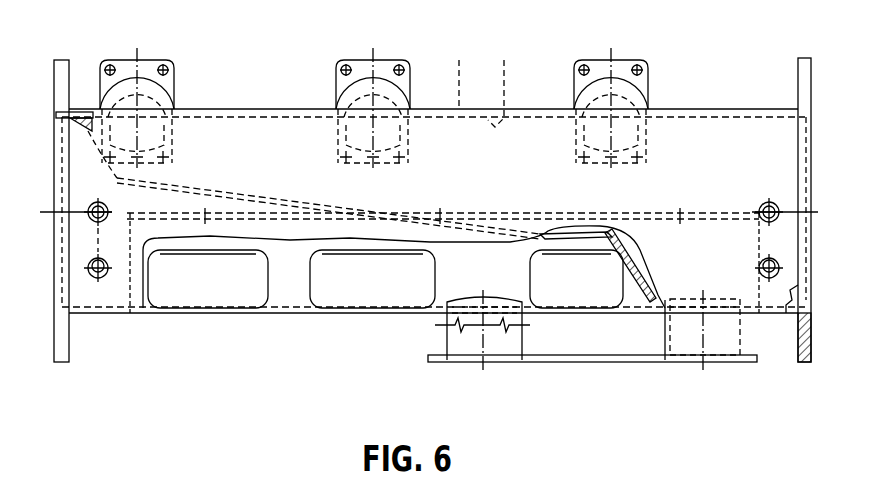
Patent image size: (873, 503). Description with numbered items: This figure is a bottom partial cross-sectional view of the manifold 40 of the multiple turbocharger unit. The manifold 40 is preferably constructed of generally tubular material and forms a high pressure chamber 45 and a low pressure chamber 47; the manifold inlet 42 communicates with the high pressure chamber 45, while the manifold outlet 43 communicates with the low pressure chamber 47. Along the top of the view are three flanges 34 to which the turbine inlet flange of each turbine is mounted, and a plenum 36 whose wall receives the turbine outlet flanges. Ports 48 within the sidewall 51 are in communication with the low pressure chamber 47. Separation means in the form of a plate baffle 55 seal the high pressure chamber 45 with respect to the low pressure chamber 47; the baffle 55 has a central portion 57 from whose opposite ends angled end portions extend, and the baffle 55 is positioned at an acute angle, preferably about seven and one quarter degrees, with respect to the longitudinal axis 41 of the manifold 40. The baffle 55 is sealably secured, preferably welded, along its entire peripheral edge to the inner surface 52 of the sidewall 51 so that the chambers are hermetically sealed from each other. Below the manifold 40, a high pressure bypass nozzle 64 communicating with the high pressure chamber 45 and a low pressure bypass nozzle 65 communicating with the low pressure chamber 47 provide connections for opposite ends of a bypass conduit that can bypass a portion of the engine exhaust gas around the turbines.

The flange 34 is at (128, 62).
The plenum 36 is at (707, 245).
The manifold 40 is at (248, 108).
The longitudinal axis 41 is at (47, 211).
The manifold inlet 42 is at (803, 295).
The manifold outlet 43 is at (55, 297).
The high pressure chamber 45 is at (521, 184).
The low pressure chamber 47 is at (106, 189).
The ports 48 is at (218, 291).
The sidewall 51 is at (268, 348).
The inner surface 52 is at (292, 350).
The baffle 55 is at (206, 185).
The central portion 57 is at (276, 193).
The high pressure bypass nozzle 64 is at (742, 341).
The low pressure bypass nozzle 65 is at (457, 343).